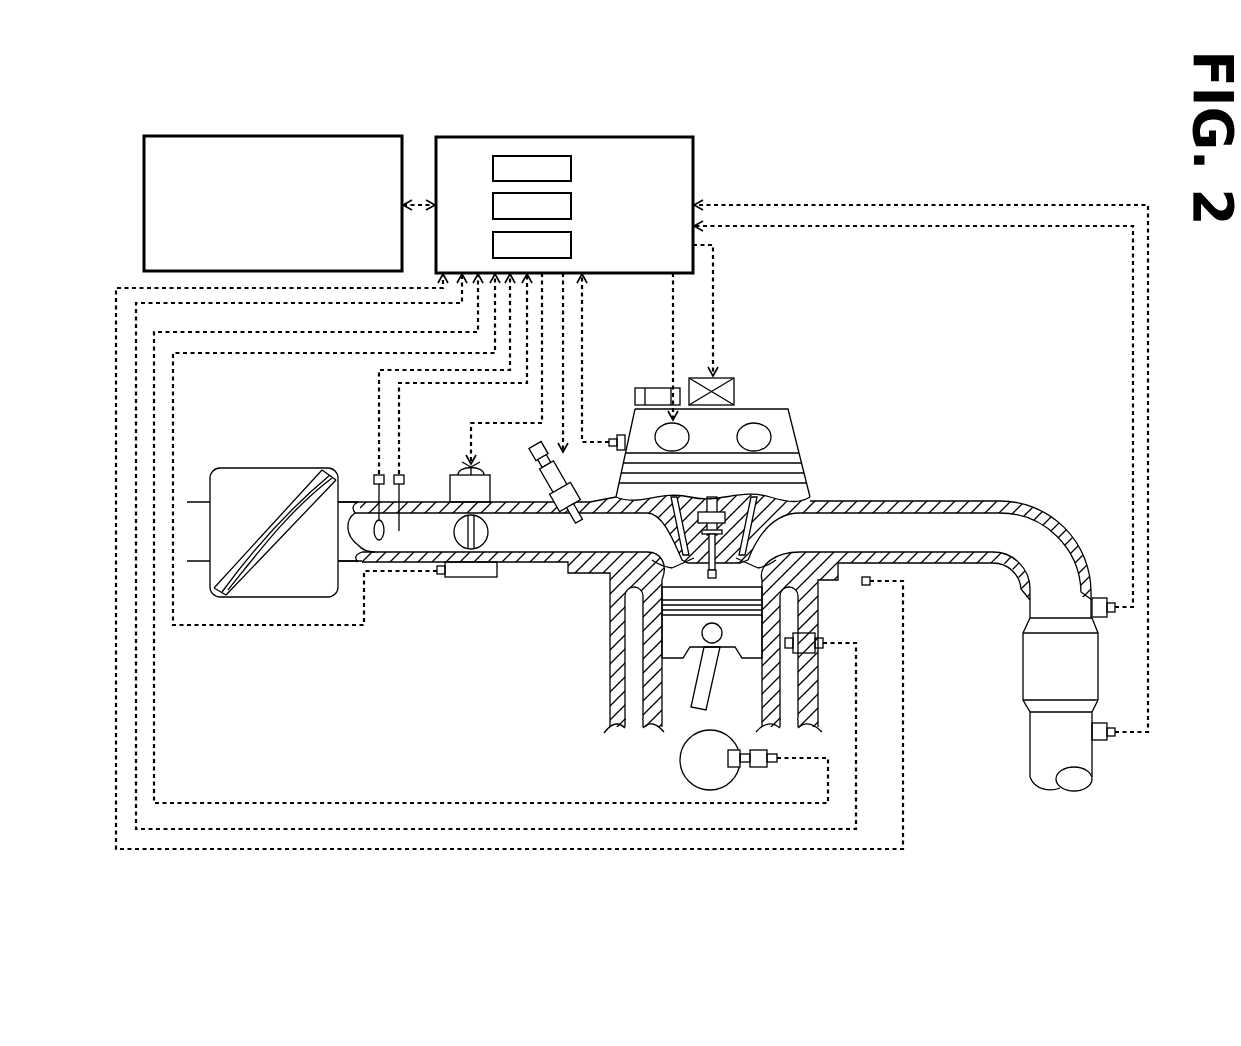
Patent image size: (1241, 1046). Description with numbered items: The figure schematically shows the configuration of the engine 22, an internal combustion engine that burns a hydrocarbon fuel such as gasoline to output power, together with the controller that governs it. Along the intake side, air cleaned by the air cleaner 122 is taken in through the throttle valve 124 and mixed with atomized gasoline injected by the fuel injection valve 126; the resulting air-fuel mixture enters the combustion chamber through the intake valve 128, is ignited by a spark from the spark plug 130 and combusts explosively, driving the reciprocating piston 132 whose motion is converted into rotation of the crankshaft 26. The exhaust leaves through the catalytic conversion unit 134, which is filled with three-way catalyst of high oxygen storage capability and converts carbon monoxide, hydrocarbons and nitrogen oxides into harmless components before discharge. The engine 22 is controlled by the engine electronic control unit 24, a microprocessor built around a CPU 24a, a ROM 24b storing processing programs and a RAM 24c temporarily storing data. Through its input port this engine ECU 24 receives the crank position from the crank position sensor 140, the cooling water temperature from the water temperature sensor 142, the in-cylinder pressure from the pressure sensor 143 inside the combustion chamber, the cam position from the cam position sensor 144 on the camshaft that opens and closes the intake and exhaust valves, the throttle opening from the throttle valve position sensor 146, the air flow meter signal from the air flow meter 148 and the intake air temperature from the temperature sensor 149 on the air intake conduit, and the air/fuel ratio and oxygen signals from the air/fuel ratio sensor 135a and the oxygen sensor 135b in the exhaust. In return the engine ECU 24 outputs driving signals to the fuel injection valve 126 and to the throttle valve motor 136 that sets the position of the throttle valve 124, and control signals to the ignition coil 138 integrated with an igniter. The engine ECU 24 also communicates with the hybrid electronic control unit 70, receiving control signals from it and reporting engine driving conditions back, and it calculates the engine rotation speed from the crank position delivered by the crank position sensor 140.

The engine 22 is at (755, 357).
The engine electronic control unit 24 is at (564, 179).
The CPU 24a is at (571, 168).
The ROM 24b is at (571, 205).
The RAM 24c is at (571, 244).
The crankshaft 26 is at (680, 758).
The hybrid electronic control unit 70 is at (275, 136).
The air cleaner 122 is at (272, 468).
The throttle valve 124 is at (485, 524).
The fuel injection valve 126 is at (566, 520).
The intake valve 128 is at (662, 546).
The spark plug 130 is at (755, 556).
The piston 132 is at (680, 632).
The catalytic conversion unit 134 is at (1032, 652).
The air/fuel ratio sensor 135a is at (1100, 596).
The oxygen sensor 135b is at (1103, 742).
The throttle valve motor 136 is at (452, 474).
The ignition coil 138 is at (736, 392).
The crank position sensor 140 is at (760, 768).
The water temperature sensor 142 is at (808, 633).
The pressure sensor 143 is at (872, 580).
The cam position sensor 144 is at (616, 437).
The throttle valve position sensor 146 is at (468, 578).
The air flow meter 148 is at (375, 476).
The temperature sensor 149 is at (402, 476).